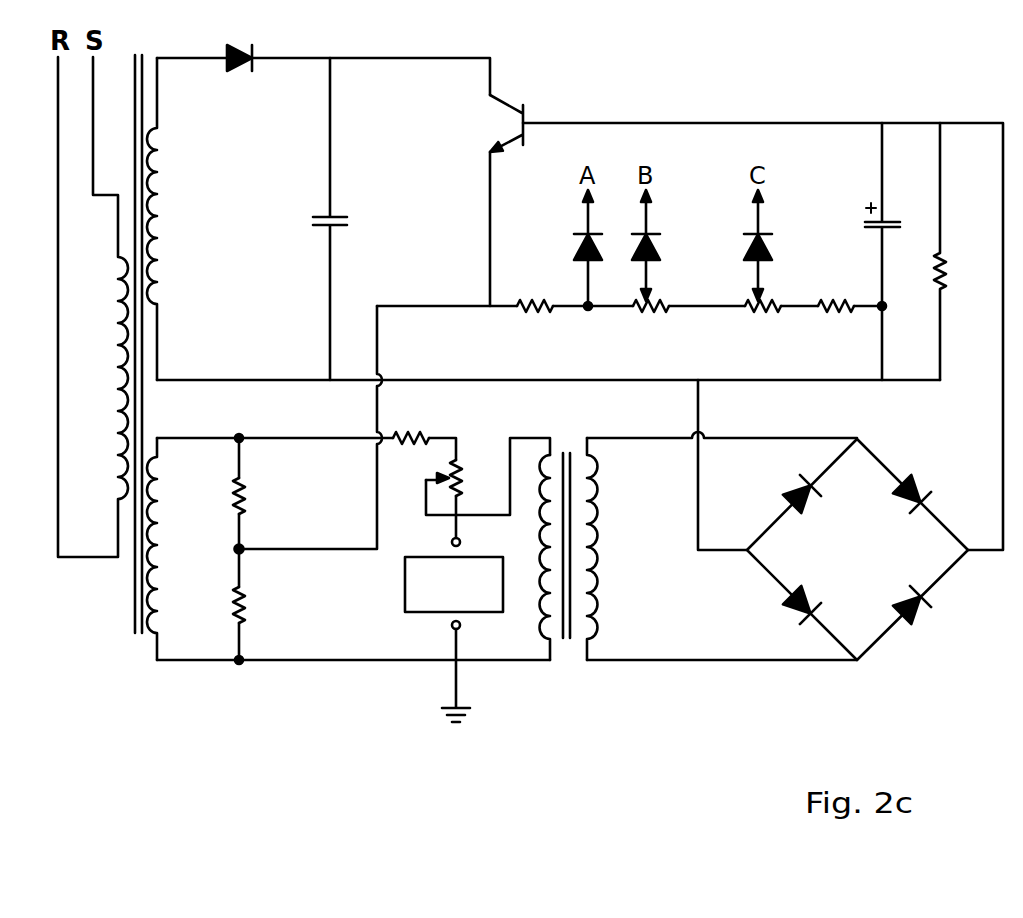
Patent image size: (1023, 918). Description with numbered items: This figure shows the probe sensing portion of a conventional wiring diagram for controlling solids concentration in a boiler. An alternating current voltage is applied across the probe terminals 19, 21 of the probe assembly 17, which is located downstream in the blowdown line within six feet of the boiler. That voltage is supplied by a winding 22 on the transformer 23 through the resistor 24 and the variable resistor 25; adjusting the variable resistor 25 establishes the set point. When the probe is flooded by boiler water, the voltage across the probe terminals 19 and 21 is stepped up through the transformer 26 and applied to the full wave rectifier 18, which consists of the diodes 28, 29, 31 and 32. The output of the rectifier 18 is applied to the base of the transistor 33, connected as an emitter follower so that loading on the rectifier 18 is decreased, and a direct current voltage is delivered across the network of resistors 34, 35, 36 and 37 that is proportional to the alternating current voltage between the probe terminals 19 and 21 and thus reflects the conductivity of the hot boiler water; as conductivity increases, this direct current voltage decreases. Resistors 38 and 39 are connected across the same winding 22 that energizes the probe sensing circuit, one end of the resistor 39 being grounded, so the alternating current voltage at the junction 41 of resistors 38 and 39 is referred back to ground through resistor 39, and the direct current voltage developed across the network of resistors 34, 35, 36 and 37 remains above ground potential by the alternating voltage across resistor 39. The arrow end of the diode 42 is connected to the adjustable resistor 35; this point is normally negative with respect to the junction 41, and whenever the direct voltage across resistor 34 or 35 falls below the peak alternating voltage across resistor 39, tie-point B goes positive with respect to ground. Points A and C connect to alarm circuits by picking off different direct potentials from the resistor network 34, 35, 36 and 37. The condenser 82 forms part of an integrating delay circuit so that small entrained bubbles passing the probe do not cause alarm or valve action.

The probe assembly 17 is at (405, 592).
The full wave rectifier 18 is at (883, 455).
The probe terminal 19 is at (464, 543).
The probe terminal 21 is at (462, 628).
The winding 22 is at (160, 526).
The transformer 23 is at (130, 603).
The resistor 24 is at (412, 430).
The variable resistor 25 is at (466, 474).
The transformer 26 is at (598, 540).
The diode 28 is at (921, 486).
The diode 29 is at (915, 618).
The diode 31 is at (793, 616).
The diode 32 is at (790, 490).
The transistor 33 is at (510, 103).
The resistor 34 is at (540, 314).
The adjustable resistor 35 is at (657, 314).
The resistor 36 is at (757, 316).
The resistor 37 is at (835, 316).
The resistor 38 is at (251, 487).
The resistor 39 is at (251, 600).
The junction 41 is at (243, 547).
The diode 42 is at (662, 257).
The condenser 82 is at (902, 217).